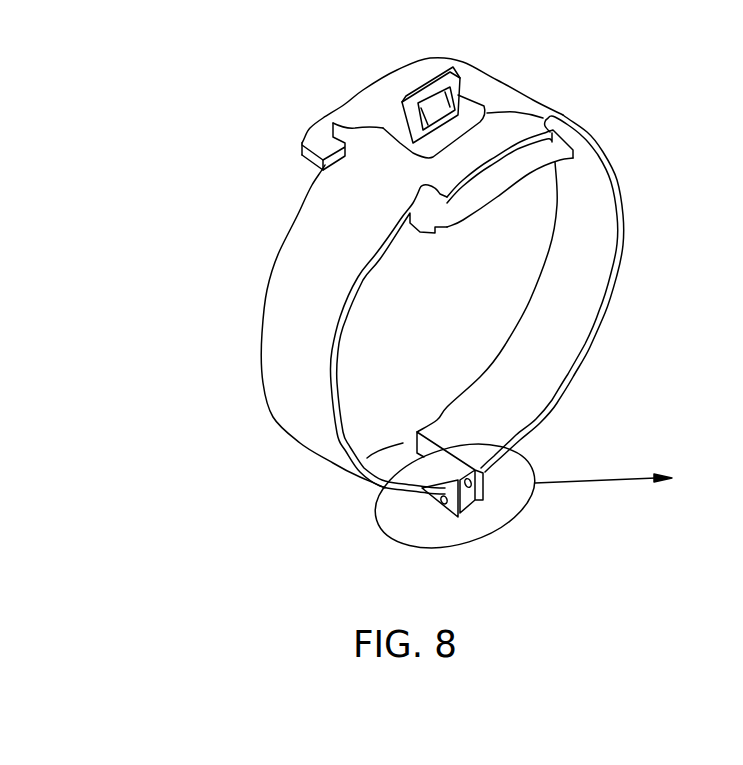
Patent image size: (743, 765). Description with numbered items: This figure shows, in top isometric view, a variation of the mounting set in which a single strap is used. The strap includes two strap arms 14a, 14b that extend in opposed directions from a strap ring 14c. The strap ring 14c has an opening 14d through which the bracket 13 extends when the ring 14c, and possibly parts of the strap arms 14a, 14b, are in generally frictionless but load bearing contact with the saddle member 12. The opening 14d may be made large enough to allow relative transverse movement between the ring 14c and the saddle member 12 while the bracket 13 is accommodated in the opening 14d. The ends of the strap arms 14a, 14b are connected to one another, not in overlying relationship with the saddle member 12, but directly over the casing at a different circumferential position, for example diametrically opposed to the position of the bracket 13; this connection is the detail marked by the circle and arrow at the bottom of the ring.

The saddle member 12 is at (318, 137).
The bracket 13 is at (457, 98).
The strap arm 14a is at (288, 330).
The strap arm 14b is at (593, 232).
The strap ring 14c is at (390, 97).
The opening 14d is at (323, 165).